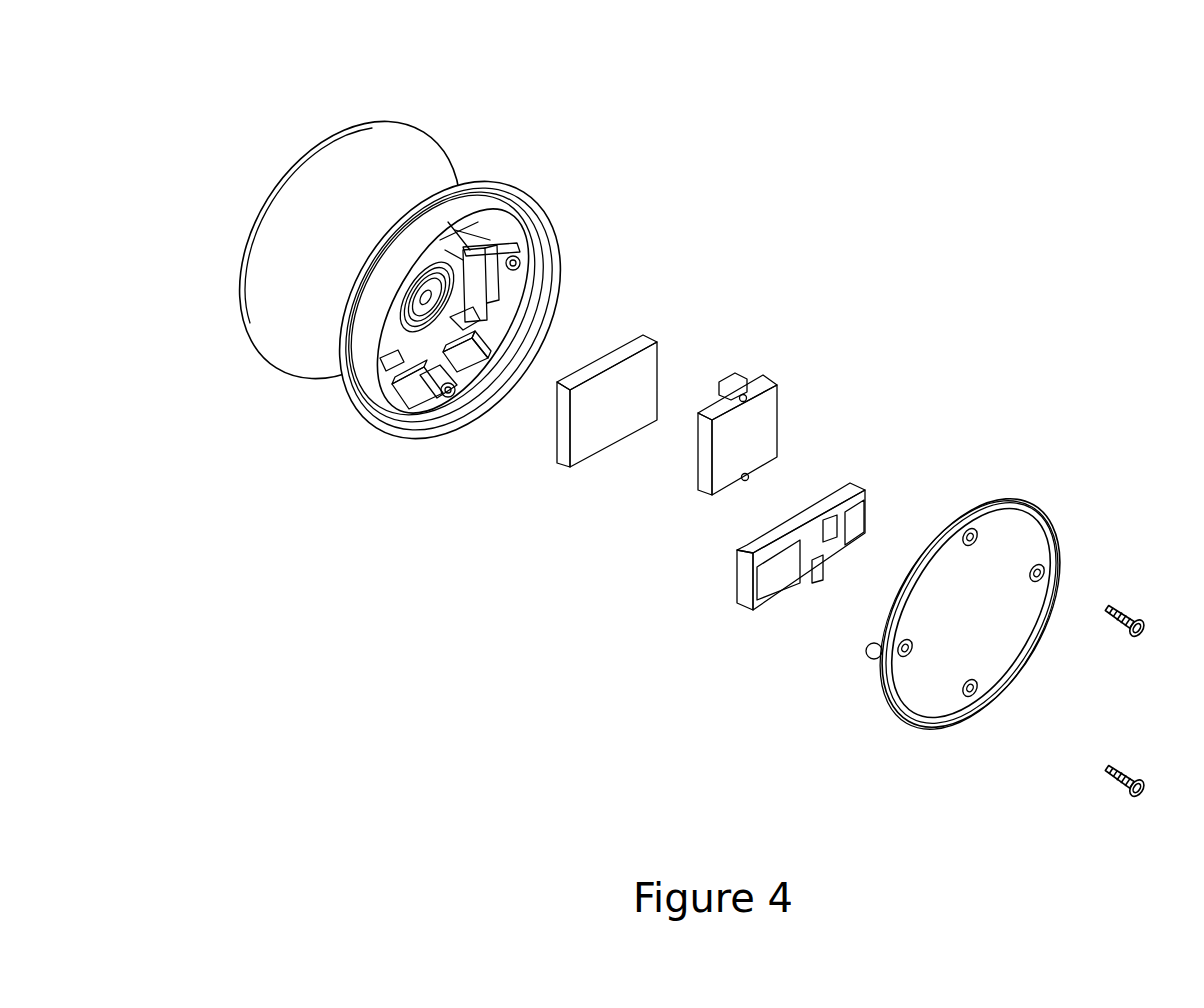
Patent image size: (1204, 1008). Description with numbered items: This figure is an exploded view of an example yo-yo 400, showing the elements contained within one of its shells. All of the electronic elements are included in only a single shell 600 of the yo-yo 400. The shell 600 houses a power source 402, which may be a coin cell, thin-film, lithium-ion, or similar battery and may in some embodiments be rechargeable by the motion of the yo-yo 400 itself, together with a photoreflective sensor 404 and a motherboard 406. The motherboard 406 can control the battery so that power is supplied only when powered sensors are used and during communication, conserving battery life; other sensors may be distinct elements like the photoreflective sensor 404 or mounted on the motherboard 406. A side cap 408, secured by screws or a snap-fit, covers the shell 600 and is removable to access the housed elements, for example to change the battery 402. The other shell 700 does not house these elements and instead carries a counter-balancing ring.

The yo-yo 400 is at (515, 152).
The shell 700 is at (297, 233).
The shell 600 is at (355, 350).
The power source 402 is at (585, 432).
The photoreflective sensor 404 is at (763, 430).
The motherboard 406 is at (763, 577).
The side cap 408 is at (1117, 490).